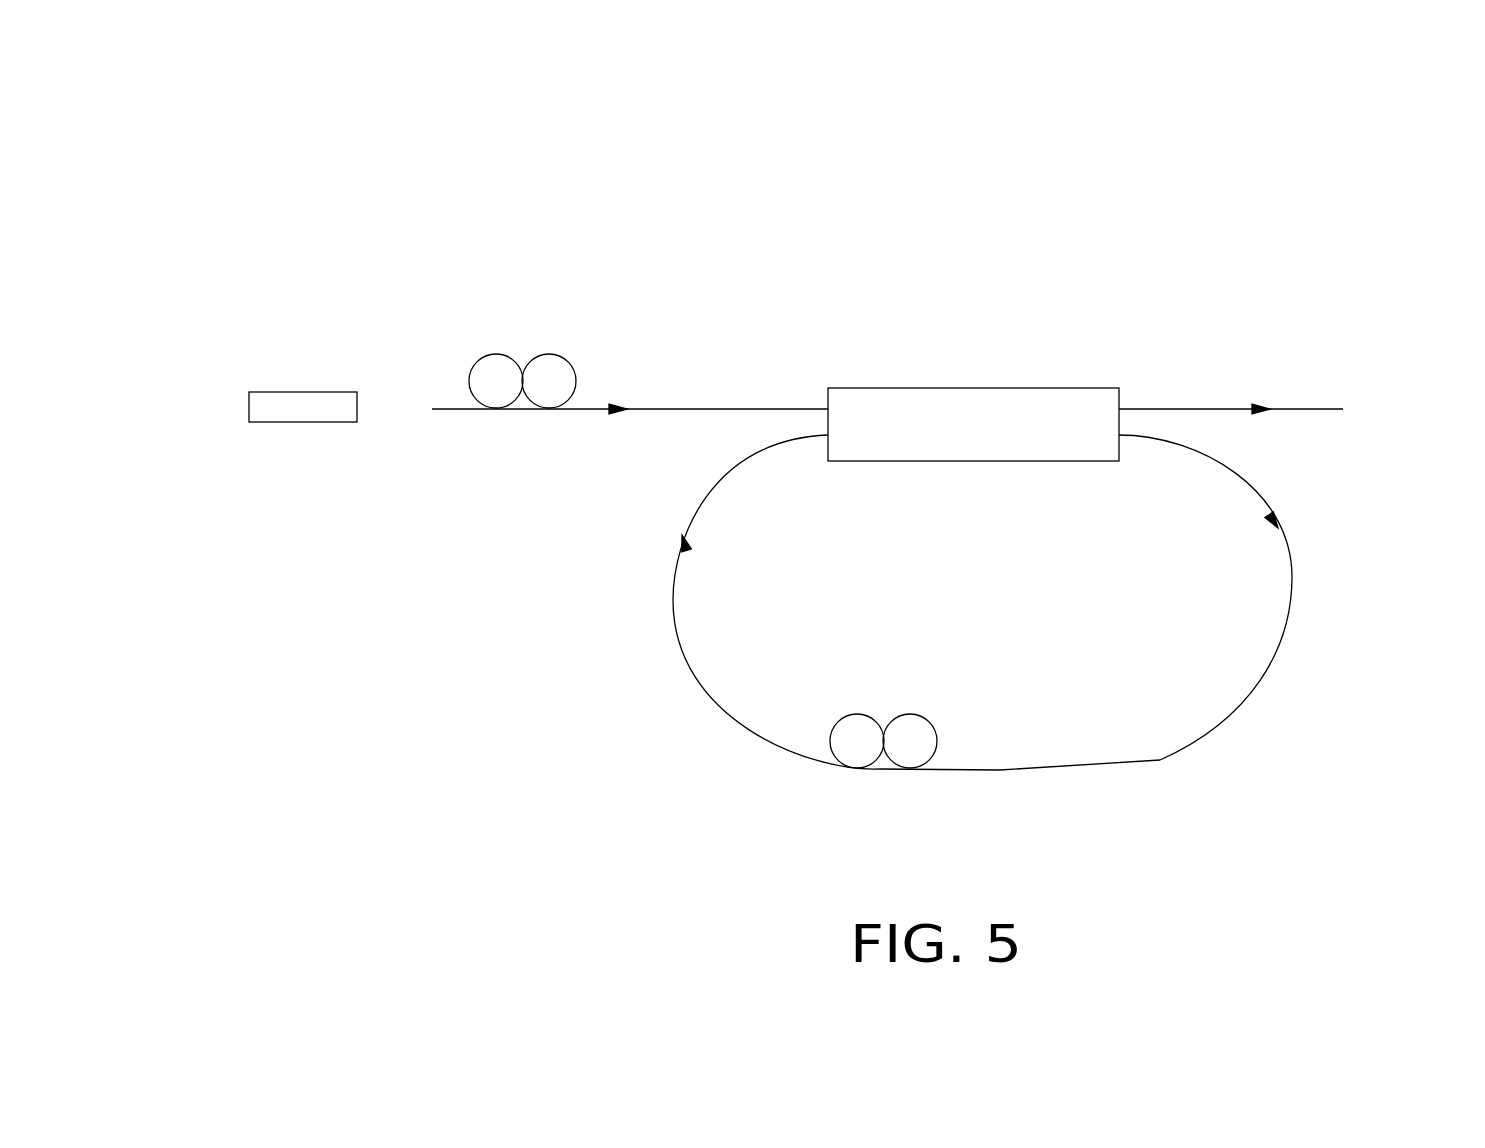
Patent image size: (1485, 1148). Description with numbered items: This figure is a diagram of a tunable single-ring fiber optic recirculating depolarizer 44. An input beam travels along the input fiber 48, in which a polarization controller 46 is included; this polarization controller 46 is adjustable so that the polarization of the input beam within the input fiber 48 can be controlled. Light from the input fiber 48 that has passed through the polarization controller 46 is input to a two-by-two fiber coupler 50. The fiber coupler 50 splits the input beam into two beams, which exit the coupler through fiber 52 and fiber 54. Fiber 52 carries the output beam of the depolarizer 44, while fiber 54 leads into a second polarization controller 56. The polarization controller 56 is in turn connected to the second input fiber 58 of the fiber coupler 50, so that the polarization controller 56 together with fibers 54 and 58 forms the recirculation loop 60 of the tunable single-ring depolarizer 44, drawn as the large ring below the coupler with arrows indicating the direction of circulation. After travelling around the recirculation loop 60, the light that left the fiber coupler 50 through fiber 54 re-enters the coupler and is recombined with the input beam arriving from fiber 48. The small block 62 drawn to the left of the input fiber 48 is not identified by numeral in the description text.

The tunable single-ring depolarizer 44 is at (1131, 240).
The polarization controller 46 is at (527, 327).
The input fiber 48 is at (468, 445).
The fiber coupler 50 is at (908, 355).
The fiber 52 is at (1306, 380).
The fiber 54 is at (1023, 642).
The polarization controller 56 is at (886, 687).
The input fiber 58 is at (695, 745).
The recirculation loop 60 is at (868, 799).
The light source 62 is at (288, 445).